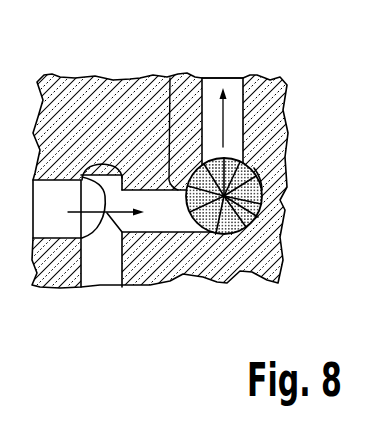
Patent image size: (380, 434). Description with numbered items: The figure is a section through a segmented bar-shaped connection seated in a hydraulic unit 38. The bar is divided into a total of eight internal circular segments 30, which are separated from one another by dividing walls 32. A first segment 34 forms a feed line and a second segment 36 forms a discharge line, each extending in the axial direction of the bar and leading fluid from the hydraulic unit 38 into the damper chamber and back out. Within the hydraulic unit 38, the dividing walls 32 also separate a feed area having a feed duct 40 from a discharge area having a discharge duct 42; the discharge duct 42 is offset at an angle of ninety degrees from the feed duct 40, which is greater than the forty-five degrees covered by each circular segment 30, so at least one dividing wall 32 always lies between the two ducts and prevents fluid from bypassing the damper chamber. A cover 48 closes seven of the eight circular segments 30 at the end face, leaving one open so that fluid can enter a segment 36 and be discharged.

The circular segment 30 is at (269, 216).
The dividing wall 32 is at (237, 236).
The first segment 34 is at (170, 78).
The second segment 36 is at (206, 78).
The hydraulic unit 38 is at (262, 257).
The feed duct 40 is at (138, 222).
The discharge duct 42 is at (237, 88).
The cover 48 is at (262, 183).